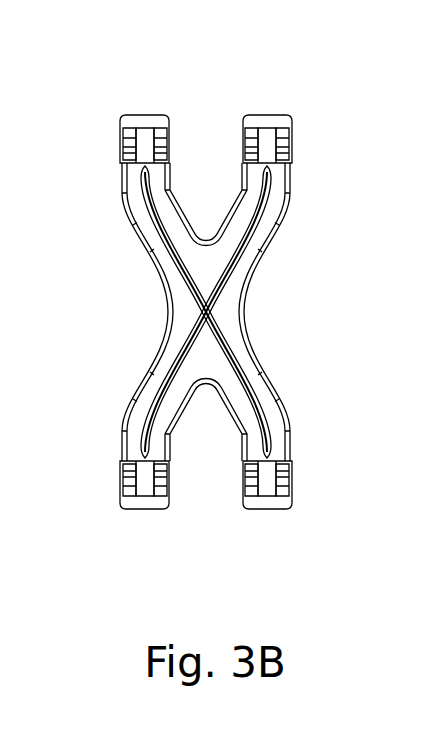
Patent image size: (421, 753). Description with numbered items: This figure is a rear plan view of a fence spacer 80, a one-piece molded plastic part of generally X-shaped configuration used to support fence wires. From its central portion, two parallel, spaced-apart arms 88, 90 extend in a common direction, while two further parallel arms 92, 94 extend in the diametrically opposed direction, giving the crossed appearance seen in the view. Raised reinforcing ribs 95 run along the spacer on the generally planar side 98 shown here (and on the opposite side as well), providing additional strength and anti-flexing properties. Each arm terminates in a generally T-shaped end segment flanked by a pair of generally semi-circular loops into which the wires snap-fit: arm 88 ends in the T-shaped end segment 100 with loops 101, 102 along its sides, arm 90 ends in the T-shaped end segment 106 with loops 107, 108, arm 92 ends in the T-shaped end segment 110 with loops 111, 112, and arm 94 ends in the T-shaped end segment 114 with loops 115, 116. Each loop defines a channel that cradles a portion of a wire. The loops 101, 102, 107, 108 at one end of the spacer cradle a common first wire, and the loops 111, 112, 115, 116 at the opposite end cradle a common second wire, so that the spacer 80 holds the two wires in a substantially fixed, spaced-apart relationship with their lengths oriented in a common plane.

The spacer 80 is at (343, 261).
The arm 88 is at (283, 193).
The arm 90 is at (128, 198).
The arm 92 is at (288, 434).
The arm 94 is at (132, 436).
The raised reinforcing ribs 95 is at (183, 338).
The planar side 98 is at (197, 274).
The T-shaped end segment 100 is at (278, 118).
The loop 101 is at (247, 135).
The loop 102 is at (290, 141).
The T-shaped end segment 106 is at (140, 116).
The loop 107 is at (125, 143).
The loop 108 is at (168, 135).
The T-shaped end segment 110 is at (277, 510).
The loop 111 is at (292, 480).
The loop 112 is at (243, 483).
The T-shaped end segment 114 is at (140, 503).
The loop 115 is at (168, 482).
The loop 116 is at (127, 473).